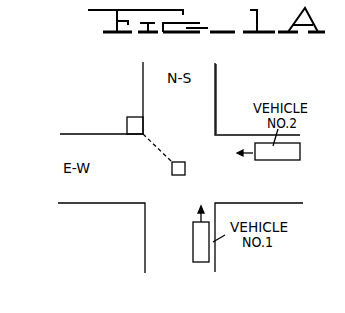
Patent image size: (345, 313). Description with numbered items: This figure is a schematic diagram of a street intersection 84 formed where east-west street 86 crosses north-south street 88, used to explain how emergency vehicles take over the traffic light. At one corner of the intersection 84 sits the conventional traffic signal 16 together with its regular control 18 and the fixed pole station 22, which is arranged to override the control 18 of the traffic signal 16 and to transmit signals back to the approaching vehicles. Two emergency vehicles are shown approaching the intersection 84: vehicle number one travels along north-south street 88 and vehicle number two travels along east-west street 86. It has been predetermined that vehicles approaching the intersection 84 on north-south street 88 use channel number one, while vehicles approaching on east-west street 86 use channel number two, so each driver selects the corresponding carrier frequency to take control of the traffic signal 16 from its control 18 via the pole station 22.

The traffic signal 16 is at (176, 161).
The control 18 is at (135, 117).
The pole station 22 is at (135, 125).
The intersection 84 is at (229, 112).
The east-west street 86 is at (287, 198).
The north-south street 88 is at (207, 72).